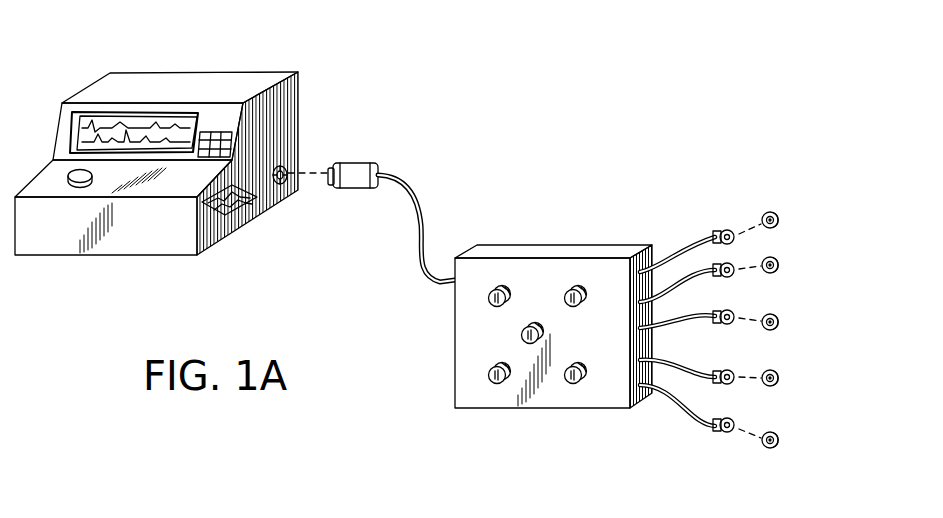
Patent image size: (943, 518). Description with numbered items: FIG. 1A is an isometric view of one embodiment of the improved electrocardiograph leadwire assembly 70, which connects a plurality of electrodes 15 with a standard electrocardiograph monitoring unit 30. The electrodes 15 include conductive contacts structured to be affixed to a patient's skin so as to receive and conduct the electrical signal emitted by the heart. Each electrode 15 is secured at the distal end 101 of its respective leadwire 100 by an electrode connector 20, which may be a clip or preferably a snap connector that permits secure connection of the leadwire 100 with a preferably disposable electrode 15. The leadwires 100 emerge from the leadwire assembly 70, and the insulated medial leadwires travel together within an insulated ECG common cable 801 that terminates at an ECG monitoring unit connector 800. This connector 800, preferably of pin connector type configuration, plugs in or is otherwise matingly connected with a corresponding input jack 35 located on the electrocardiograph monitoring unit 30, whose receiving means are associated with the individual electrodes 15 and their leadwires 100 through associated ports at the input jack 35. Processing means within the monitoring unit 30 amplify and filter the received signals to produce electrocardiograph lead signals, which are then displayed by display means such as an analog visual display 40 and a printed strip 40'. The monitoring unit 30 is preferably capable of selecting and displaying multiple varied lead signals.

The electrocardiograph monitoring unit 30 is at (318, 77).
The analog visual display 40 is at (134, 85).
The printed strip 40' is at (251, 238).
The input jack 35 is at (290, 164).
The ECG monitoring unit connector 800 is at (358, 194).
The ECG common cable 801 is at (402, 163).
The electrocardiograph leadwire assembly 70 is at (498, 237).
The leadwires 100 is at (672, 248).
The distal end 101 is at (678, 240).
The electrode connector 20 is at (728, 220).
The electrodes 15 is at (768, 200).